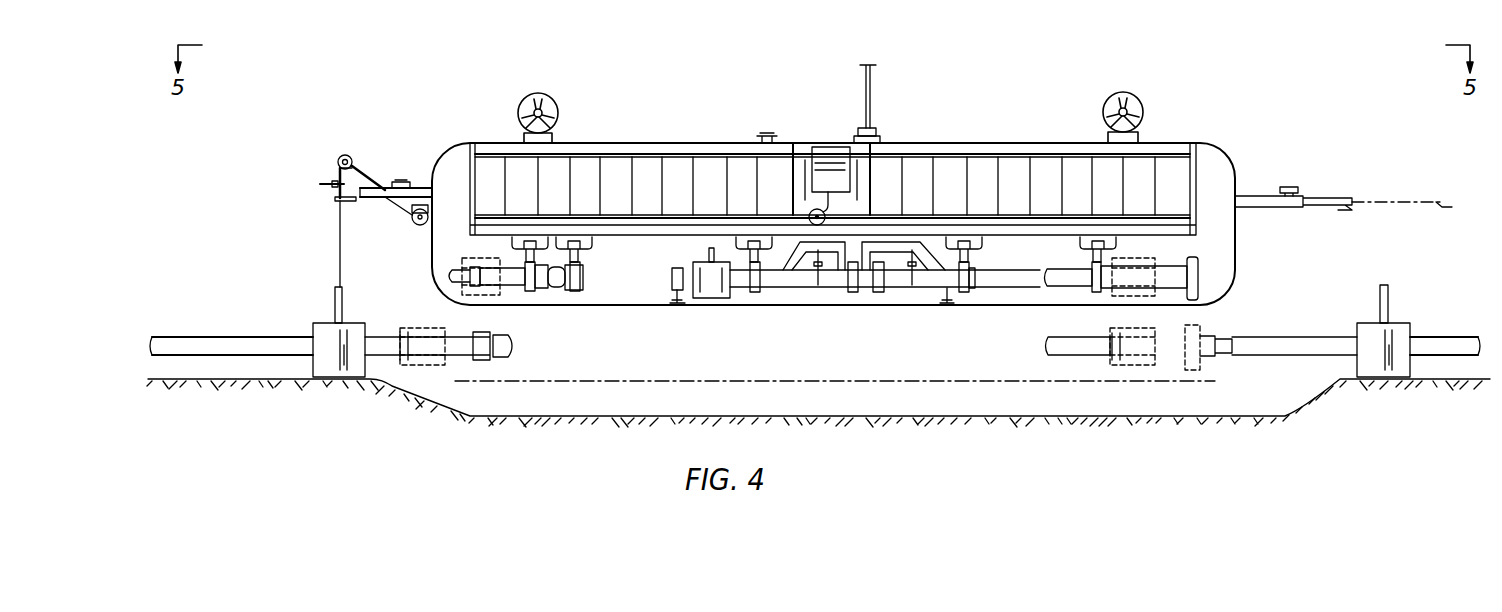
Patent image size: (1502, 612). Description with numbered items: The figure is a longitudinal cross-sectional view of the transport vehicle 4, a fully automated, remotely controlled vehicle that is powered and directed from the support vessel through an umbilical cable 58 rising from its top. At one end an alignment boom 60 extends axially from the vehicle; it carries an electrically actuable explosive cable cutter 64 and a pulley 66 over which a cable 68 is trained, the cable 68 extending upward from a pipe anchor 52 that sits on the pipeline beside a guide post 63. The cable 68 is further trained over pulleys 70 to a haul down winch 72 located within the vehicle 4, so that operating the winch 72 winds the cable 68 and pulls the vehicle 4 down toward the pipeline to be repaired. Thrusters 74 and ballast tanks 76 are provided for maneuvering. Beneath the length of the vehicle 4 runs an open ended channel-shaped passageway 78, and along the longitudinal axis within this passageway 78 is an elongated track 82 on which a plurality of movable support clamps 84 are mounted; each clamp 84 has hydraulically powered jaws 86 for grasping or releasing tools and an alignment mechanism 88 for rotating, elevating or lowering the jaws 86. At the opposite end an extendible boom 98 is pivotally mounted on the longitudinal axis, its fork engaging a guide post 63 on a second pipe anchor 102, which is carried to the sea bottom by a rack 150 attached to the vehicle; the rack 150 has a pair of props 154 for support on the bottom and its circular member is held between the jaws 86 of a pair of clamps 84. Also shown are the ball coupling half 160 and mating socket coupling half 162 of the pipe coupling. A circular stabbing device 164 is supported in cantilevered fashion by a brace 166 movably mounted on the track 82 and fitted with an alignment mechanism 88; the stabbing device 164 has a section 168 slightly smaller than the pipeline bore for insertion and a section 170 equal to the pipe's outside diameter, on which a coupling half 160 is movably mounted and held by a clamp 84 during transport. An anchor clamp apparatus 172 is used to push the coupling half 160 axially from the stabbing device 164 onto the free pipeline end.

The transport vehicle 4 is at (1200, 112).
The pipe anchor 52 is at (318, 338).
The umbilical cable 58 is at (872, 78).
The alignment boom 60 is at (410, 214).
The guide post 63 is at (333, 300).
The explosive cable cutter 64 is at (332, 181).
The pulley 66 is at (345, 154).
The cable 68 is at (371, 185).
The pulleys 70 is at (826, 214).
The haul down winch 72 is at (836, 160).
The thrusters 74 is at (1125, 90).
The ballast tanks 76 is at (740, 170).
The channel-shaped passageway 78 is at (634, 288).
The elongated track 82 is at (647, 237).
The movable support clamps 84 is at (531, 258).
The hydraulically powered jaws 86 is at (545, 282).
The alignment mechanism 88 is at (573, 256).
The extendible boom 98 is at (1313, 180).
The second pipe anchor 102 is at (1388, 380).
The rack 150 is at (866, 298).
The props 154 is at (681, 300).
The ball coupling half 160 is at (510, 281).
The socket coupling half 162 is at (1194, 270).
The circular stabbing device 164 is at (438, 275).
The brace 166 is at (588, 269).
The section 168 is at (450, 262).
The section 170 is at (481, 256).
The anchor clamp apparatus 172 is at (1134, 256).